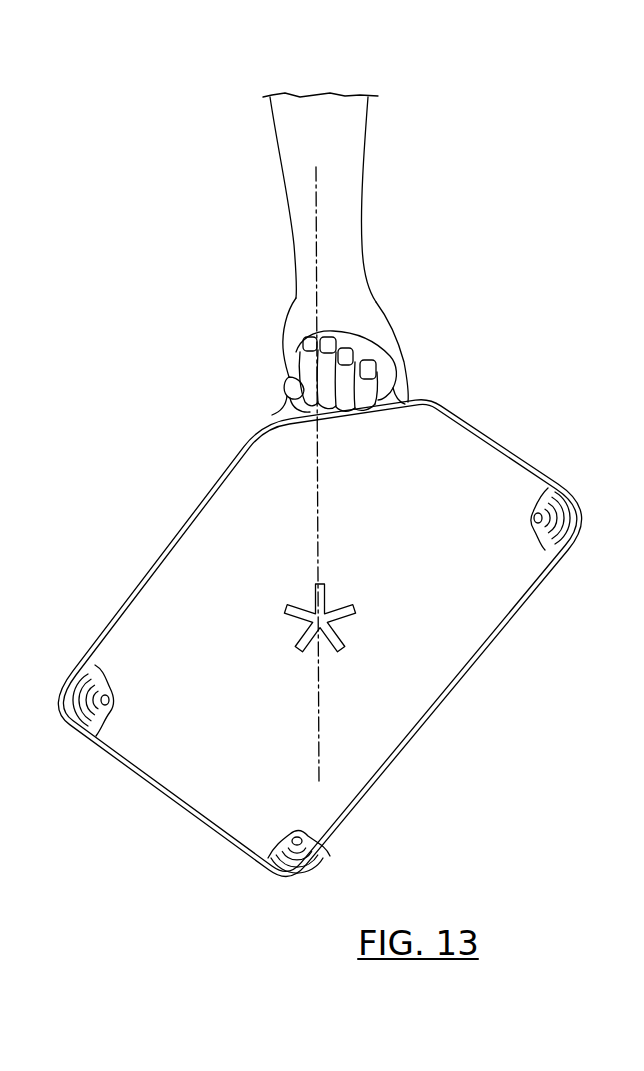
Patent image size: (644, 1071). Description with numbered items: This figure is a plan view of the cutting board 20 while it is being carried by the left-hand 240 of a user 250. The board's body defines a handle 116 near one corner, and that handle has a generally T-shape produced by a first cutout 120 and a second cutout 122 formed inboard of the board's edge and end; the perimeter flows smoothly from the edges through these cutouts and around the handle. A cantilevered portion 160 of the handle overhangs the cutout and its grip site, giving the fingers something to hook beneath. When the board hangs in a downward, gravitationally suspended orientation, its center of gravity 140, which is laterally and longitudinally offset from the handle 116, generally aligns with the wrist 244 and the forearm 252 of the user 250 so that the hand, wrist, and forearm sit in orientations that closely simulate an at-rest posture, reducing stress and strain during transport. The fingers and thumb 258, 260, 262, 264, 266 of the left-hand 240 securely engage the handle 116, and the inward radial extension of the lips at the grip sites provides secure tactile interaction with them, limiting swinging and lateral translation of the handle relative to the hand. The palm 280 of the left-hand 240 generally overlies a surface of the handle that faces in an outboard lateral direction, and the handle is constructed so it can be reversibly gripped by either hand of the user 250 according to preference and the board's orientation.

The cutting board 20 is at (480, 664).
The handle 116 is at (365, 312).
The first cutout 120 is at (240, 412).
The second cutout 122 is at (450, 388).
The center of gravity 140 is at (342, 645).
The cantilevered portion 160 is at (284, 400).
The left-hand 240 is at (388, 353).
The wrist 244 is at (307, 303).
The user 250 is at (357, 108).
The forearm 252 is at (343, 162).
The finger 258 is at (368, 412).
The finger 260 is at (350, 404).
The finger 262 is at (292, 398).
The finger 264 is at (291, 367).
The finger 266 is at (410, 394).
The palm 280 is at (388, 340).